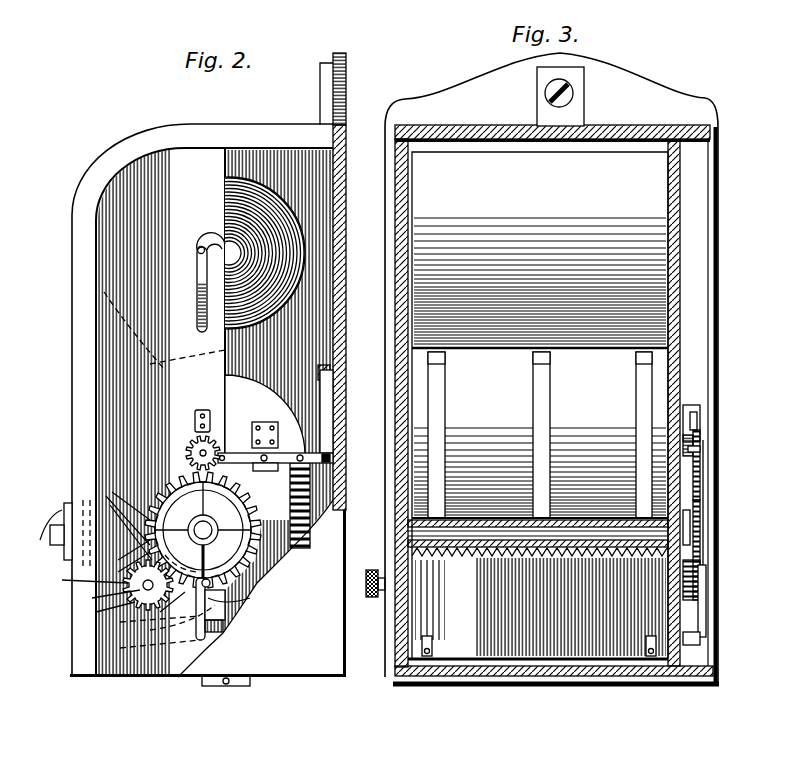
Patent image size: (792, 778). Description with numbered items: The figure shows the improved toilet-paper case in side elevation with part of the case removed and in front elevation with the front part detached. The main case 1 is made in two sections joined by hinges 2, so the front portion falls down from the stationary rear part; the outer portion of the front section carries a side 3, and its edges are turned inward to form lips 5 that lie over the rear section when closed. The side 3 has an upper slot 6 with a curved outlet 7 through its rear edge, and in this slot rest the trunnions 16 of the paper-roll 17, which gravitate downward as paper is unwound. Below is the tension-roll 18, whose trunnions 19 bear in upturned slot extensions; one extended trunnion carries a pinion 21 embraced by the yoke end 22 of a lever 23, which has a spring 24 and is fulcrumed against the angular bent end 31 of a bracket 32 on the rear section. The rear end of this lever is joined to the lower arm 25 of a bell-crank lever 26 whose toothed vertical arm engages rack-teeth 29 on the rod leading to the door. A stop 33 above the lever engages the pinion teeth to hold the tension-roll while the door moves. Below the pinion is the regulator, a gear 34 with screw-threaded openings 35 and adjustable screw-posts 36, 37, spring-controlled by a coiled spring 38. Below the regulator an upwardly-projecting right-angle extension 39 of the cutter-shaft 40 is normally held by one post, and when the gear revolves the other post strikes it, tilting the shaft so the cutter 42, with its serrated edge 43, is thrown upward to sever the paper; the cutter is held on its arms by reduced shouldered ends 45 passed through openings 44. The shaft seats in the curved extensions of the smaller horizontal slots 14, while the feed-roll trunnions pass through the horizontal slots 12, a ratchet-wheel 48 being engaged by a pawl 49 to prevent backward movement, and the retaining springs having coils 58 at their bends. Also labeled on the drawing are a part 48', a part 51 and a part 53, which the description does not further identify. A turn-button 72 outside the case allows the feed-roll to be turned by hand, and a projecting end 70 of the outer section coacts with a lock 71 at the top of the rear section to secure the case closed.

In FIG. 2, the main case 1 is at (349, 178).
In FIG. 3, the main case 1 is at (388, 165).
In FIG. 2, the hinges 2 is at (230, 686).
In FIG. 3, the hinges 2 is at (526, 687).
In FIG. 2, the side 3 is at (192, 404).
In FIG. 3, the side 3 is at (680, 396).
In FIG. 2, the lips 5 is at (72, 400).
In FIG. 2, the upper slots 6 is at (197, 290).
In FIG. 2, the curved outlets 7 is at (214, 235).
In FIG. 2, the horizontal slots 12 is at (176, 600).
In FIG. 2, the smaller horizontal slots 14 is at (215, 633).
In FIG. 2, the trunnions 16 is at (197, 251).
In FIG. 3, the trunnions 16 is at (670, 258).
In FIG. 2, the paper-roll 17 is at (224, 256).
In FIG. 3, the paper-roll 17 is at (540, 270).
In FIG. 2, the tension-roll 18 is at (265, 415).
In FIG. 3, the tension-roll 18 is at (540, 435).
In FIG. 2, the trunnions 19 is at (225, 455).
In FIG. 3, the trunnions 19 is at (700, 449).
In FIG. 2, the pinion 21 is at (196, 456).
In FIG. 3, the pinion 21 is at (700, 466).
In FIG. 2, the yoke end 22 is at (188, 449).
In FIG. 3, the yoke end 22 is at (694, 442).
In FIG. 2, the lever 23 is at (281, 455).
In FIG. 2, the spring 24 is at (302, 490).
In FIG. 2, the lower arm 25 is at (338, 452).
In FIG. 2, the bell-crank lever 26 is at (330, 417).
In FIG. 2, the rack-teeth 29 is at (332, 374).
In FIG. 2, the angular bent end 31 is at (260, 471).
In FIG. 2, the bracket 32 is at (270, 424).
In FIG. 3, the bracket 32 is at (695, 428).
In FIG. 2, the stop 33 is at (205, 412).
In FIG. 3, the stop 33 is at (690, 410).
In FIG. 2, the gear 34 is at (203, 530).
In FIG. 3, the gear 34 is at (700, 543).
In FIG. 2, the screw-threaded openings 35 is at (203, 530).
In FIG. 2, the adjustable screw-post 36 is at (250, 598).
In FIG. 2, the adjustable screw-post 37 is at (207, 535).
In FIG. 3, the adjustable screw-post 37 is at (755, 447).
In FIG. 2, the coiled spring 38 is at (182, 554).
In FIG. 3, the coiled spring 38 is at (690, 525).
In FIG. 2, the right-angle extension 39 is at (197, 624).
In FIG. 3, the right-angle extension 39 is at (706, 612).
In FIG. 3, the cutter-shaft 40 is at (700, 638).
In FIG. 3, the cutter 42 is at (540, 607).
In FIG. 3, the serrated edge 43 is at (458, 558).
In FIG. 3, the openings 44 is at (432, 640).
In FIG. 3, the reduced shouldered ends 45 is at (426, 656).
In FIG. 2, the ratchet-wheel 48 is at (98, 552).
In FIG. 2, the spring 48' is at (84, 578).
In FIG. 2, the pawl 49 is at (148, 585).
In FIG. 3, the pawl 49 is at (700, 580).
In FIG. 2, the bracket 51 is at (50, 538).
In FIG. 3, the guide strips 53 is at (400, 545).
In FIG. 2, the coils 58 is at (248, 609).
In FIG. 2, the projecting end 70 is at (230, 132).
In FIG. 2, the lock 71 is at (320, 100).
In FIG. 3, the lock 71 is at (584, 90).
In FIG. 3, the turn-button 72 is at (371, 600).